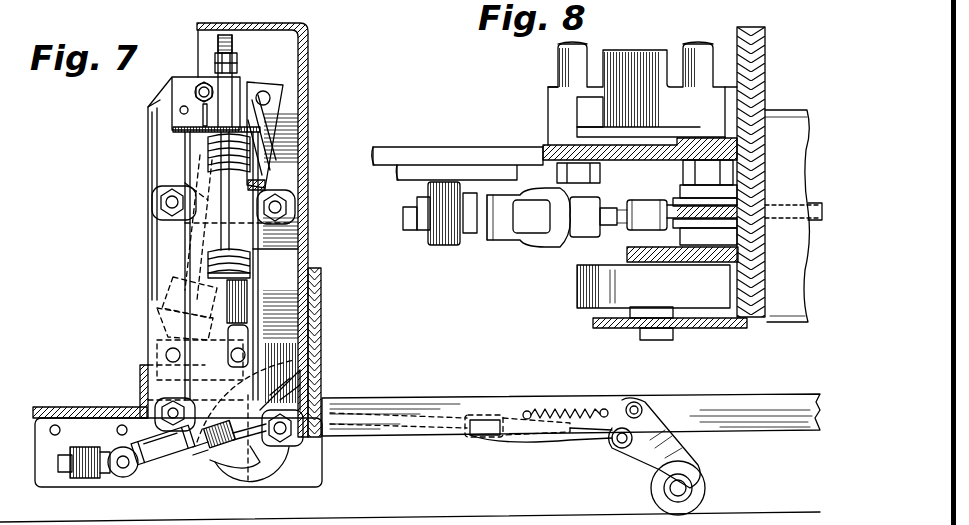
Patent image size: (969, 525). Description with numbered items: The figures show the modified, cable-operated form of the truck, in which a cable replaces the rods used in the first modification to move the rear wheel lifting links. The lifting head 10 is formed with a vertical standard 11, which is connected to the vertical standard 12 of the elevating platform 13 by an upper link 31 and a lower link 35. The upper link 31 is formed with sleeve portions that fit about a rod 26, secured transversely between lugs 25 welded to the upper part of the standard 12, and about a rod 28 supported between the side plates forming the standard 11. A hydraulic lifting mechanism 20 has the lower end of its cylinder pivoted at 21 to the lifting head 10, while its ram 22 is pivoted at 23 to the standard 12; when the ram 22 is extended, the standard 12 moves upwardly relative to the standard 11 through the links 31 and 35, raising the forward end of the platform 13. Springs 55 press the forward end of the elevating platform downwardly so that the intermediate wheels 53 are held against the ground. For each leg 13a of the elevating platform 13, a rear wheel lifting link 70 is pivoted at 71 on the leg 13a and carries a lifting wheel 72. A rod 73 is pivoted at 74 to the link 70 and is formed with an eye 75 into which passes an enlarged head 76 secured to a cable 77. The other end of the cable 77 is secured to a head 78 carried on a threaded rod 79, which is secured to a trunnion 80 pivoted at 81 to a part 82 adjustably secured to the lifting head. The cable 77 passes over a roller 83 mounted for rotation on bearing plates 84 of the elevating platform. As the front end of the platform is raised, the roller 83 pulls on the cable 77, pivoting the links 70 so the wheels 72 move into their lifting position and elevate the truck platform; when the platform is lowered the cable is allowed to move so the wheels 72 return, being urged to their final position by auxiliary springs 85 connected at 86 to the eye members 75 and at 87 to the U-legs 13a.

In FIG. 7, the lifting head 10 is at (205, 378).
In FIG. 7, the vertical standard 11 is at (146, 126).
In FIG. 7, the vertical standard 12 is at (309, 157).
In FIG. 8, the vertical standard 12 is at (767, 35).
In FIG. 7, the elevating platform 13 is at (452, 396).
In FIG. 8, the elevating platform 13 is at (457, 163).
In FIG. 7, the leg 13a is at (730, 397).
In FIG. 8, the leg 13a is at (782, 108).
In FIG. 7, the hydraulic lifting mechanism 20 is at (185, 253).
In FIG. 7, the pivot 21 is at (166, 350).
In FIG. 7, the ram 22 is at (268, 140).
In FIG. 7, the pivot 23 is at (270, 99).
In FIG. 7, the lugs 25 is at (290, 228).
In FIG. 8, the lugs 25 is at (683, 163).
In FIG. 7, the rod 26 is at (292, 207).
In FIG. 7, the rod 28 is at (158, 203).
In FIG. 7, the link 31 is at (210, 188).
In FIG. 7, the link 35 is at (312, 352).
In FIG. 8, the link 35 is at (630, 50).
In FIG. 7, the intermediate wheels 53 is at (262, 472).
In FIG. 8, the intermediate wheels 53 is at (577, 290).
In FIG. 7, the springs 55 is at (298, 249).
In FIG. 7, the rear wheel lifting link 70 is at (672, 452).
In FIG. 7, the pivot 71 is at (638, 404).
In FIG. 7, the lifting wheel 72 is at (706, 490).
In FIG. 7, the rod 73 is at (585, 442).
In FIG. 7, the pivot 74 is at (615, 446).
In FIG. 7, the eye 75 is at (480, 440).
In FIG. 7, the enlarged head 76 is at (495, 440).
In FIG. 7, the cable 77 is at (385, 415).
In FIG. 8, the cable 77 is at (810, 233).
In FIG. 7, the head 78 is at (218, 442).
In FIG. 8, the head 78 is at (645, 200).
In FIG. 7, the rod 79 is at (200, 452).
In FIG. 8, the rod 79 is at (612, 205).
In FIG. 7, the trunnion 80 is at (170, 458).
In FIG. 8, the trunnion 80 is at (562, 239).
In FIG. 7, the pivot 81 is at (125, 466).
In FIG. 7, the part 82 is at (108, 476).
In FIG. 8, the part 82 is at (490, 224).
In FIG. 7, the roller 83 is at (265, 460).
In FIG. 8, the roller 83 is at (673, 237).
In FIG. 7, the bearing plates 84 is at (300, 386).
In FIG. 8, the bearing plates 84 is at (760, 218).
In FIG. 7, the auxiliary springs 85 is at (560, 410).
In FIG. 7, the connection 86 is at (528, 410).
In FIG. 7, the connection 87 is at (604, 408).